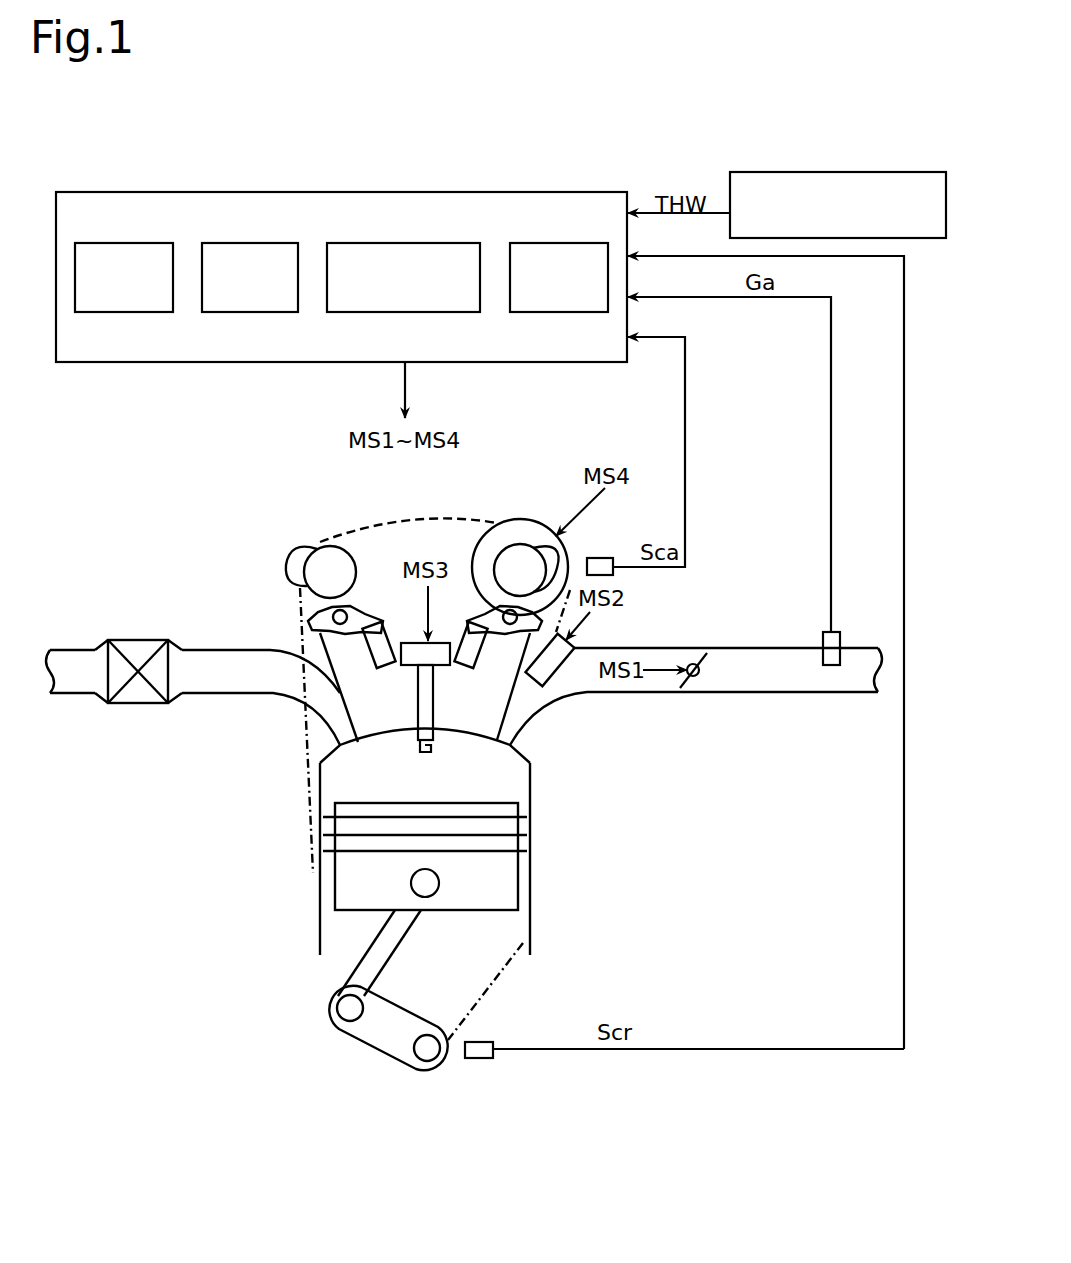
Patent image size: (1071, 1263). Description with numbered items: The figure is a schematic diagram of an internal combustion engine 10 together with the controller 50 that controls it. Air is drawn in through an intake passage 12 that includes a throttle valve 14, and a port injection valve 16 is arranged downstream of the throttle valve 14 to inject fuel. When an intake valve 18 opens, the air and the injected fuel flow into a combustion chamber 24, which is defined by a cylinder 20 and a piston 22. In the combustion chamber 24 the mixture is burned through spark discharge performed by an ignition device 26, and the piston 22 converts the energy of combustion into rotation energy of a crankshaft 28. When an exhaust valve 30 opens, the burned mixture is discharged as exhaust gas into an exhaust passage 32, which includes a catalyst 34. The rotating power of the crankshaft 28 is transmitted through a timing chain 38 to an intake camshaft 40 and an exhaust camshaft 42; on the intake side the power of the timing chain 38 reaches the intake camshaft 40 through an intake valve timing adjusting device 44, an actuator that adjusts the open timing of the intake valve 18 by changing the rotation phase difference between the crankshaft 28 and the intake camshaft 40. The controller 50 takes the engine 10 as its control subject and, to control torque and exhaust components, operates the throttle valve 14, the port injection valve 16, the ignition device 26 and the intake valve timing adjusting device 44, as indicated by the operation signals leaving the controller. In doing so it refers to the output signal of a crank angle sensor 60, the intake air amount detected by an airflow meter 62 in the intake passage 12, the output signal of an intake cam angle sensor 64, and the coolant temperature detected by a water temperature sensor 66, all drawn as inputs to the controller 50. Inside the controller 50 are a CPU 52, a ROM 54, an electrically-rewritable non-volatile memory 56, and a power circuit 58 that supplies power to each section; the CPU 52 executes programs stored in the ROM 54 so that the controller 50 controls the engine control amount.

The internal combustion engine 10 is at (742, 800).
The intake passage 12 is at (830, 692).
The throttle valve 14 is at (697, 678).
The port injection valve 16 is at (573, 656).
The intake valve 18 is at (519, 728).
The cylinder 20 is at (533, 835).
The piston 22 is at (505, 876).
The combustion chamber 24 is at (492, 792).
The ignition device 26 is at (410, 645).
The crankshaft 28 is at (427, 1045).
The exhaust valve 30 is at (370, 740).
The exhaust passage 32 is at (282, 694).
The catalyst 34 is at (140, 703).
The timing chain 38 is at (497, 975).
The intake camshaft 40 is at (512, 556).
The exhaust camshaft 42 is at (346, 548).
The intake valve timing adjusting device 44 is at (548, 528).
The controller 50 is at (598, 192).
The CPU 52 is at (133, 243).
The ROM 54 is at (260, 243).
The non-volatile memory 56 is at (445, 243).
The power circuit 58 is at (573, 243).
The crank angle sensor 60 is at (488, 1042).
The airflow meter 62 is at (842, 640).
The intake cam angle sensor 64 is at (606, 558).
The water temperature sensor 66 is at (876, 172).